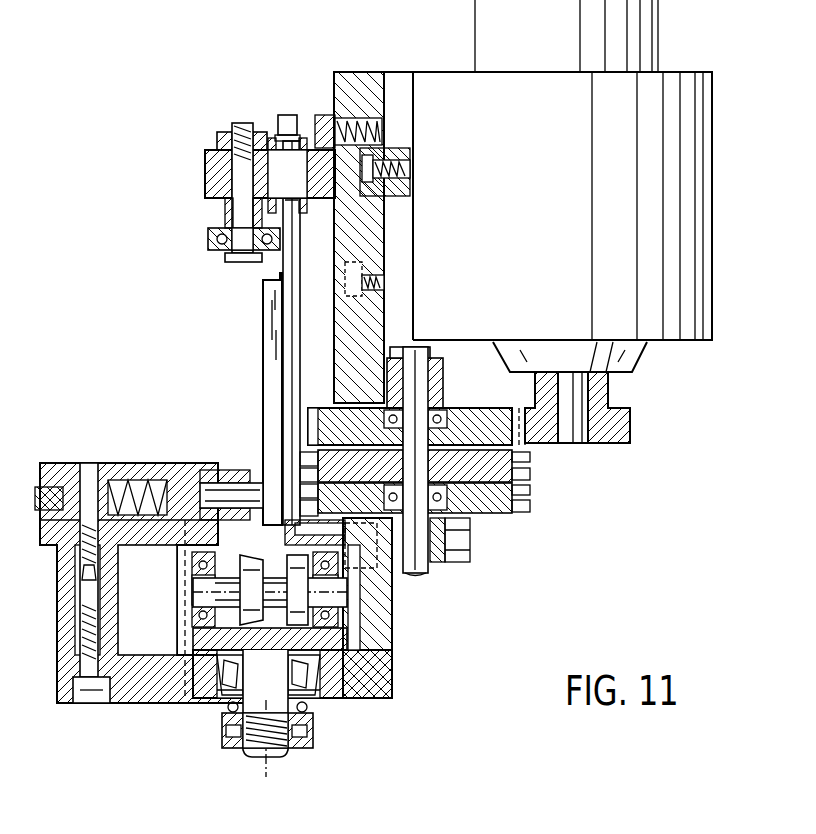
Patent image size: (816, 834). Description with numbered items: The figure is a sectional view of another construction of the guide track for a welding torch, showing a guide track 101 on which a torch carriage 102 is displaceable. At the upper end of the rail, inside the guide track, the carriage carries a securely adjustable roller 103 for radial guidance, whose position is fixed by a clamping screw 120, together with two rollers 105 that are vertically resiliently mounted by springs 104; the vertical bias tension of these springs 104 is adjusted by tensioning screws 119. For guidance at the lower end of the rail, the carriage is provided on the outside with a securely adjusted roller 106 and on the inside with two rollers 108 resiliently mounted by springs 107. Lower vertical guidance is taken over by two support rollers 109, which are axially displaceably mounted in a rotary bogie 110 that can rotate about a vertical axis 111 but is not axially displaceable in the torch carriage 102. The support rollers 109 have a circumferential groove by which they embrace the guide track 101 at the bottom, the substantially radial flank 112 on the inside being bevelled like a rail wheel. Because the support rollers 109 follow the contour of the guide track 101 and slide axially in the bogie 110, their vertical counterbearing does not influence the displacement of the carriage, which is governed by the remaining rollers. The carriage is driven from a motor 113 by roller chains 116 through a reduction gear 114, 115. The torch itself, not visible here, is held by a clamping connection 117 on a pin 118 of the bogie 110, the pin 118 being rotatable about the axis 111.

The guide track 101 is at (268, 320).
The torch carriage 102 is at (377, 602).
The securely adjustable roller 103 is at (212, 238).
The springs 104 is at (302, 140).
The rollers 105 is at (273, 143).
The securely adjusted roller 106 is at (287, 517).
The springs 107 is at (140, 480).
The rollers 108 is at (215, 492).
The support rollers 109 is at (320, 628).
The rotary bogie 110 is at (205, 645).
The vertical axis 111 is at (268, 777).
The radial flank 112 is at (305, 698).
The motor 113 is at (473, 85).
The reduction gear 114 is at (612, 428).
The reduction gear 115 is at (501, 418).
The roller chains 116 is at (300, 455).
The clamping connection 117 is at (228, 748).
The pin 118 is at (258, 702).
The tensioning screws 119 is at (283, 115).
The clamping screw 120 is at (217, 133).